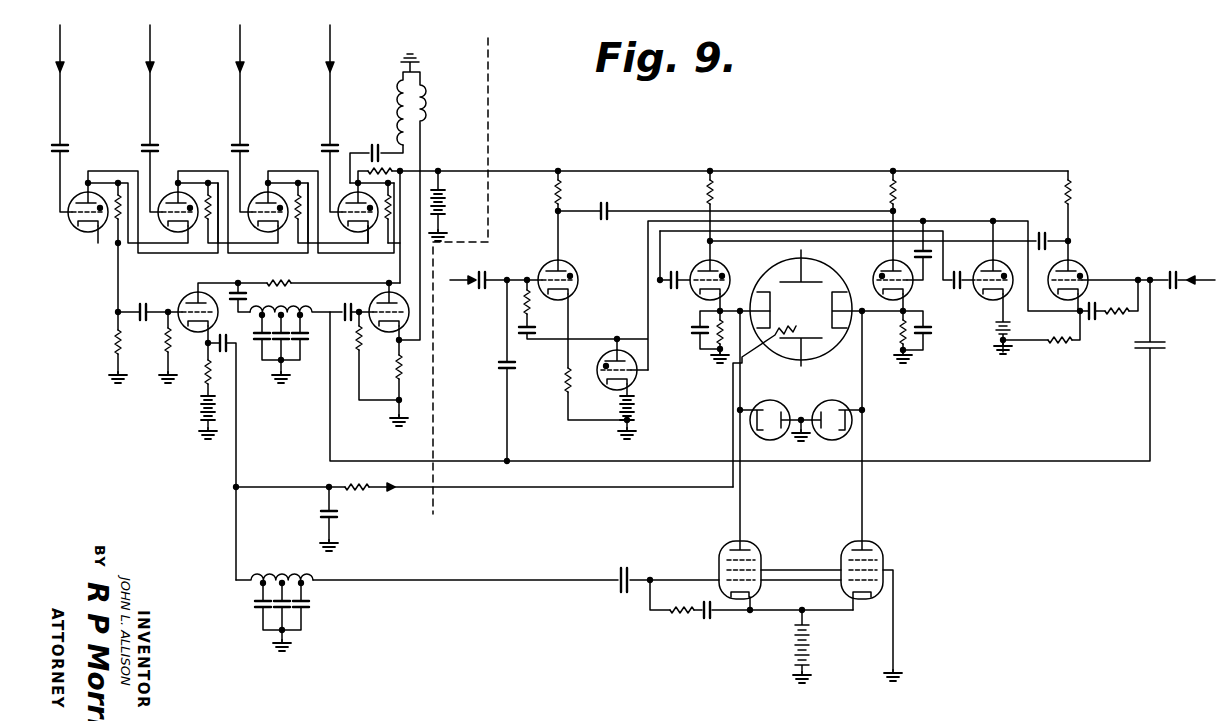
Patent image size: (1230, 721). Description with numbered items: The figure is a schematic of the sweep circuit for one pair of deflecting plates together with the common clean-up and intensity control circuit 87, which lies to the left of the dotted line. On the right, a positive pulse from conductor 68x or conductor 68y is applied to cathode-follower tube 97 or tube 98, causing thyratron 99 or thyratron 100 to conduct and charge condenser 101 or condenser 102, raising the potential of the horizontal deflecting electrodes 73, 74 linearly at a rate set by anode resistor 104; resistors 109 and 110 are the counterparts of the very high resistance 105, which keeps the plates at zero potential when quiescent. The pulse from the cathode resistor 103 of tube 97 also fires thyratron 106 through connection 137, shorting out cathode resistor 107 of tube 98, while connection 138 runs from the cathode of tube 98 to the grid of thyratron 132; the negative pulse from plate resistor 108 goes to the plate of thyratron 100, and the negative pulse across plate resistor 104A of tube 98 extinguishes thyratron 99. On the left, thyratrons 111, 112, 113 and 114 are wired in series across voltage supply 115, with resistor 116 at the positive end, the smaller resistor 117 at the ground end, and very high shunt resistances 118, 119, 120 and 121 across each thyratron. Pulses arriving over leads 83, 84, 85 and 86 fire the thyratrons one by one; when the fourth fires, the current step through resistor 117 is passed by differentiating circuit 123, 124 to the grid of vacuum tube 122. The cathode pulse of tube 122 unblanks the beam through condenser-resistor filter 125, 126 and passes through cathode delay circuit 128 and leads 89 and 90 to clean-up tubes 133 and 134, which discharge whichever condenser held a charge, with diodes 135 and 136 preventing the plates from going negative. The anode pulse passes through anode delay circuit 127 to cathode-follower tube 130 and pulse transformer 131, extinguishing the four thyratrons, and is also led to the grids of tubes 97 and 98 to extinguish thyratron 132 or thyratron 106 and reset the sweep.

The input lead 83 is at (63, 90).
The input lead 84 is at (153, 90).
The input lead 85 is at (243, 90).
The input lead 86 is at (333, 90).
The clean-up and intensity control circuit 87 is at (478, 83).
The lead 89 is at (538, 580).
The lead 90 is at (1152, 410).
The conductor 68x is at (458, 277).
The conductor 68y is at (1180, 272).
The horizontal deflecting electrode 73 is at (762, 292).
The horizontal deflecting electrode 74 is at (850, 292).
The cathode-follower tube 97 is at (565, 270).
The cathode-follower tube 98 is at (1082, 272).
The thyratron 99 is at (704, 268).
The thyratron 100 is at (886, 264).
The condenser 101 is at (698, 328).
The condenser 102 is at (932, 336).
The cathode resistor 103 is at (571, 385).
The anode resistor 104 is at (716, 193).
The plate resistor 104A is at (1072, 193).
The resistance 105 is at (712, 348).
The thyratron 106 is at (984, 300).
The cathode resistor 107 is at (1060, 343).
The plate resistor 108 is at (898, 348).
The resistor 109 is at (563, 196).
The resistor 110 is at (897, 193).
The thyratron 111 is at (85, 195).
The thyratron 112 is at (176, 195).
The thyratron 113 is at (266, 195).
The thyratron 114 is at (344, 219).
The voltage supply 115 is at (447, 212).
The resistor 116 is at (385, 160).
The resistor 117 is at (112, 340).
The shunt resistance 118 is at (114, 238).
The shunt resistance 119 is at (205, 236).
The shunt resistance 120 is at (295, 236).
The shunt resistance 121 is at (385, 236).
The vacuum tube 122 is at (192, 292).
The differentiating circuit resistor 123 is at (171, 343).
The differentiating circuit condenser 124 is at (143, 304).
The filter condenser 125 is at (318, 517).
The filter resistor 126 is at (355, 491).
The anode delay circuit 127 is at (288, 362).
The cathode delay circuit 128 is at (262, 612).
The cathode-follower tube 130 is at (377, 297).
The pulse transformer 131 is at (424, 118).
The thyratron 132 is at (606, 358).
The clean-up tube 133 is at (748, 547).
The clean-up tube 134 is at (870, 549).
The diode 135 is at (776, 400).
The diode 136 is at (838, 400).
The connection 137 is at (946, 252).
The connection 138 is at (656, 296).